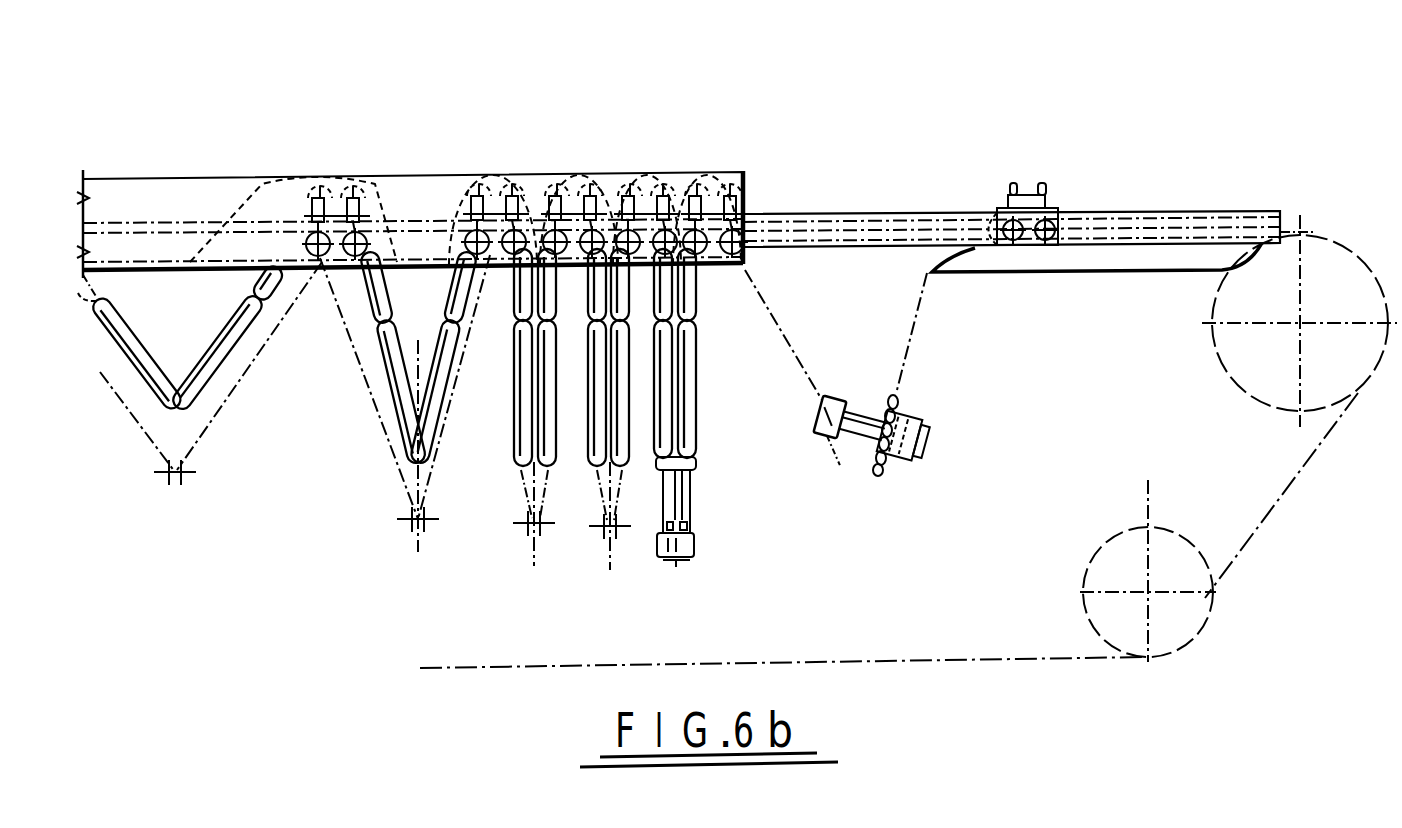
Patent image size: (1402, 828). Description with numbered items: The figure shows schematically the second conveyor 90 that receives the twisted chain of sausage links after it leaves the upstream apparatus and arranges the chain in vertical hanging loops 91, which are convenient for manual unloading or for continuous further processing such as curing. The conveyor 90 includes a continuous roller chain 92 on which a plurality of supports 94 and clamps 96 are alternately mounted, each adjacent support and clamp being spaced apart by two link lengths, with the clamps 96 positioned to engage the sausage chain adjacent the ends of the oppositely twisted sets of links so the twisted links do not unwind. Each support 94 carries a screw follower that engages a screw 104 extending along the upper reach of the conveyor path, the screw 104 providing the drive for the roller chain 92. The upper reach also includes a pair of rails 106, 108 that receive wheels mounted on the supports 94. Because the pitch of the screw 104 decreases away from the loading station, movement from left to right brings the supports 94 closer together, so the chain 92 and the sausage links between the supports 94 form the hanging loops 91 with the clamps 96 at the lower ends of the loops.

The second conveyor 90 is at (505, 100).
The vertical hanging loops 91 is at (490, 500).
The continuous roller chain 92 is at (990, 250).
The supports 94 is at (372, 190).
The clamps 96 is at (697, 545).
The screw 104 is at (258, 195).
The rail 106 is at (1011, 171).
The rail 108 is at (1118, 215).